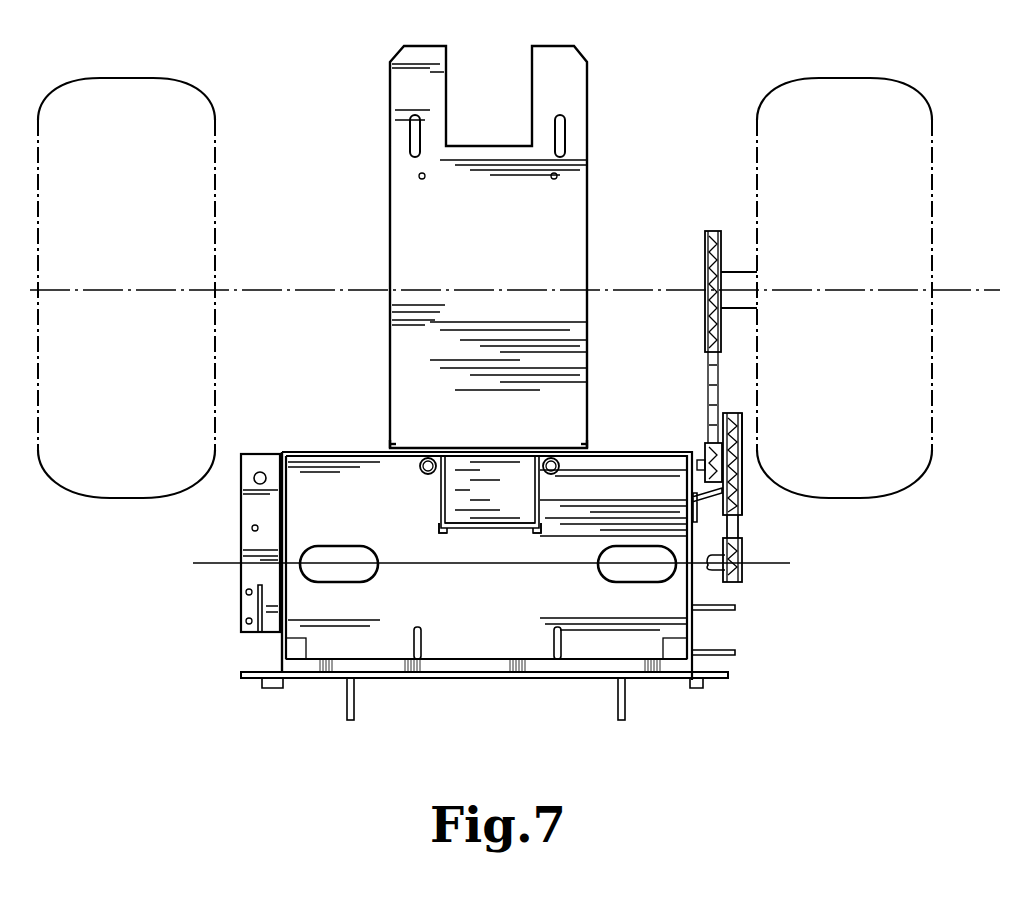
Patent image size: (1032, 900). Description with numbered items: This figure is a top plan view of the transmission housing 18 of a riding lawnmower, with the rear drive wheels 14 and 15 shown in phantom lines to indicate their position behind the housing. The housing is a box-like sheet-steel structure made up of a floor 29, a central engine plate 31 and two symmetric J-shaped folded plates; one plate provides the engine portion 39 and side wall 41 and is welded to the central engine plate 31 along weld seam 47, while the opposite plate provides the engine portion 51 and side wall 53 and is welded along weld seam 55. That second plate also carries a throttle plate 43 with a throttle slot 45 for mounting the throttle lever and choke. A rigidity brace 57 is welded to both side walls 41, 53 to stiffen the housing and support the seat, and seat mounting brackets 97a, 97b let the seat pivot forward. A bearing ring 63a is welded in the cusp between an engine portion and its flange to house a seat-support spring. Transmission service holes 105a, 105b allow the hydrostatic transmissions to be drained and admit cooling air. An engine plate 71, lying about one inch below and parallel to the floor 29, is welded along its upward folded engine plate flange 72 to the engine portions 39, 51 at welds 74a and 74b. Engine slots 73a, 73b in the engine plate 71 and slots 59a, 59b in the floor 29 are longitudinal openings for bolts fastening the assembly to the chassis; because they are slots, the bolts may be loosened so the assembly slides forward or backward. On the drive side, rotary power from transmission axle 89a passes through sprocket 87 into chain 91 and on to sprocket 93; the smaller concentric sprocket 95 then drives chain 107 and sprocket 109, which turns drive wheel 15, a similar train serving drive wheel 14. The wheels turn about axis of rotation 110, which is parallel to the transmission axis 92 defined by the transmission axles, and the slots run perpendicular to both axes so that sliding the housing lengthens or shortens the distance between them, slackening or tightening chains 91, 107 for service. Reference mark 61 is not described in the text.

The drive wheel 14 is at (138, 268).
The drive wheel 15 is at (840, 268).
The transmission housing 18 is at (456, 726).
The floor 29 is at (497, 503).
The central engine plate 31 is at (499, 529).
The engine portion 39 is at (648, 458).
The side wall 41 is at (691, 500).
The throttle plate 43 is at (275, 515).
The throttle slot 45 is at (262, 637).
The weld seam 47 is at (539, 529).
The engine portion 51 is at (377, 458).
The side wall 53 is at (287, 504).
The weld seam 55 is at (447, 529).
The rigidity brace 57 is at (537, 679).
The slot 59a is at (560, 630).
The slot 59b is at (414, 630).
The plate lower edge 61 is at (381, 448).
The bearing ring 63a is at (424, 472).
The engine plate 71 is at (489, 277).
The engine plate flange 72 is at (508, 450).
The engine slot 73a is at (565, 140).
The engine slot 73b is at (410, 140).
The weld 74a is at (593, 448).
The weld 74b is at (386, 448).
The sprocket 87 is at (742, 575).
The transmission axle 89a is at (720, 572).
The chain 91 is at (742, 530).
The transmission axis 92 is at (222, 563).
The sprocket 93 is at (742, 505).
The sprocket 95 is at (705, 447).
The seat mounting bracket 97a is at (625, 716).
The seat mounting bracket 97b is at (354, 716).
The transmission service hole 105a is at (653, 575).
The transmission service hole 105b is at (355, 575).
The chain 107 is at (708, 373).
The sprocket 109 is at (705, 238).
The axis of rotation 110 is at (343, 290).